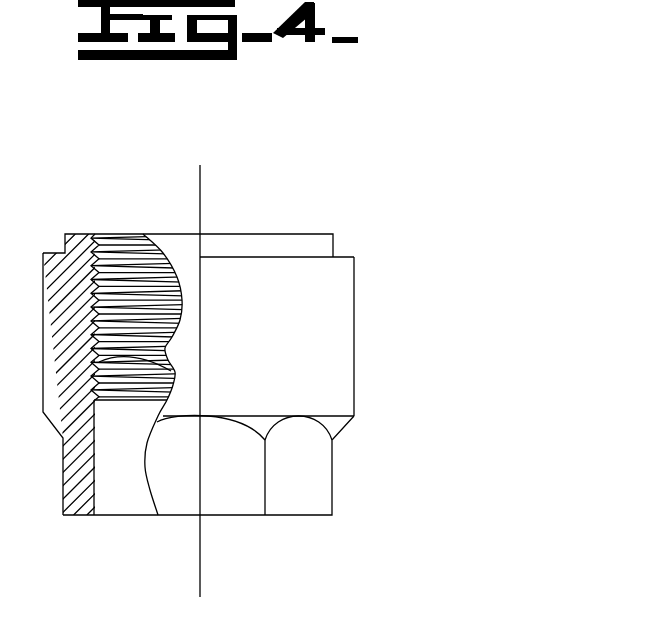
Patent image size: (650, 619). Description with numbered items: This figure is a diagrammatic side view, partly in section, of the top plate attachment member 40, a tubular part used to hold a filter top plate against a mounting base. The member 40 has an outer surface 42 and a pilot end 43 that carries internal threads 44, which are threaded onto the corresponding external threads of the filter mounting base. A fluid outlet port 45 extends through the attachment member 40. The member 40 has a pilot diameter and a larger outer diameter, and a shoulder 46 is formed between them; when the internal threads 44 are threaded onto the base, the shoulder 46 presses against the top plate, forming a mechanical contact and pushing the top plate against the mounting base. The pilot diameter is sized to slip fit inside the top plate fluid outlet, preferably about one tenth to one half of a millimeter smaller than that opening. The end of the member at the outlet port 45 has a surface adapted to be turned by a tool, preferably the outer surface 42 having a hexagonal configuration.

The top plate attachment member 40 is at (400, 371).
The outer surface 42 is at (354, 334).
The pilot end 43 is at (282, 235).
The internal threads 44 is at (175, 370).
The fluid outlet port 45 is at (118, 490).
The shoulder 46 is at (340, 257).